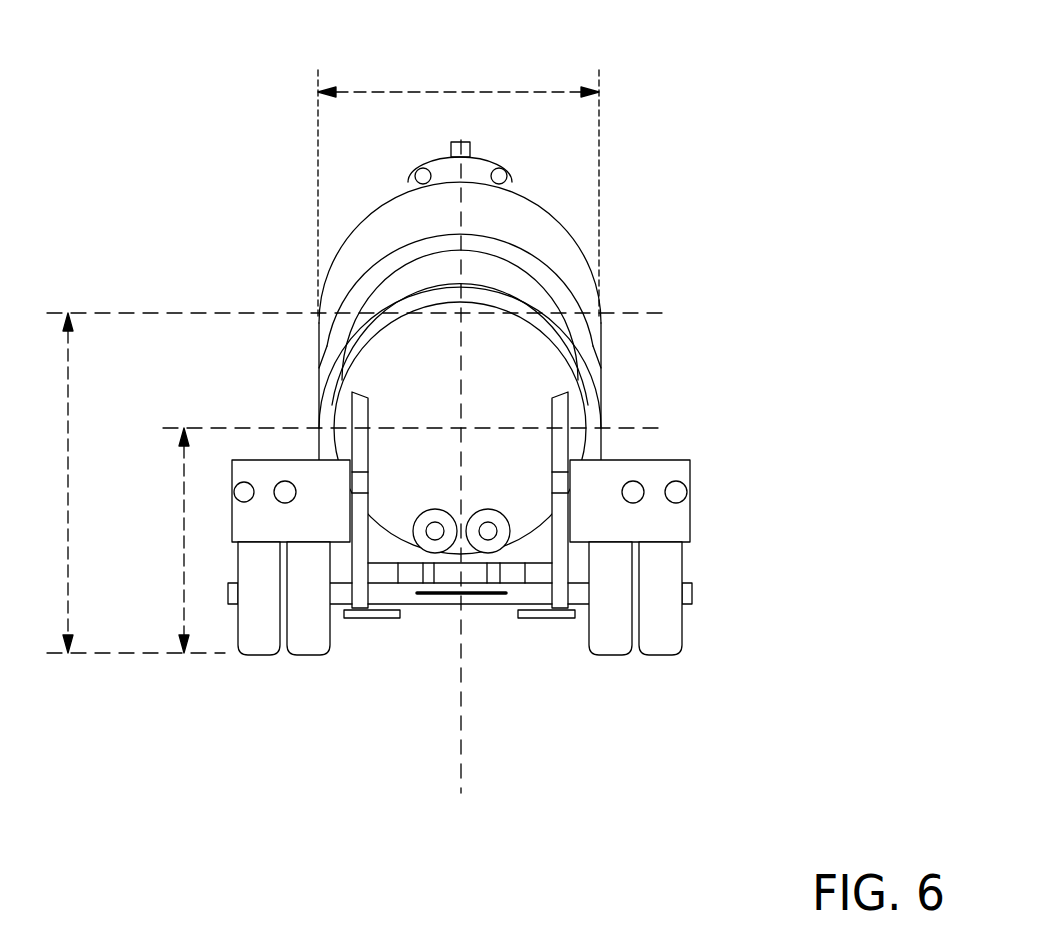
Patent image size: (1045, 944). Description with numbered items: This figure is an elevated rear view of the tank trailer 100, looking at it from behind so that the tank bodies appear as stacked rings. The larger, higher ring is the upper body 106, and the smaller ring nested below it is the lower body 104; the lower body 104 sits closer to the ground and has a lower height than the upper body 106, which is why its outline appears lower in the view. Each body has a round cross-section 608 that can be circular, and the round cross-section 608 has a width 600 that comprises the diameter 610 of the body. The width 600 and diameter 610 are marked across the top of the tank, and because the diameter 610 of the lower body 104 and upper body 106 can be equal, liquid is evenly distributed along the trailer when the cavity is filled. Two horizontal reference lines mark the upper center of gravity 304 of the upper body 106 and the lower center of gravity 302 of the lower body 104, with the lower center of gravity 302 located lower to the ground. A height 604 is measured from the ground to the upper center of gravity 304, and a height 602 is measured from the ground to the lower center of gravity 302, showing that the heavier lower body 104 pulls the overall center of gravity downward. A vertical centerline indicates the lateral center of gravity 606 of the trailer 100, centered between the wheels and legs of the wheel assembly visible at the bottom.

The trailer 100 is at (518, 334).
The lower body 104 is at (540, 375).
The upper body 106 is at (466, 279).
The round cross-section 608 is at (345, 208).
The upper center of gravity 304 is at (642, 313).
The lower center of gravity 302 is at (642, 430).
The lateral center of gravity 606 is at (463, 697).
The width 600 is at (458, 191).
The diameter 610 is at (458, 92).
The height 604 is at (127, 483).
The height 602 is at (168, 540).